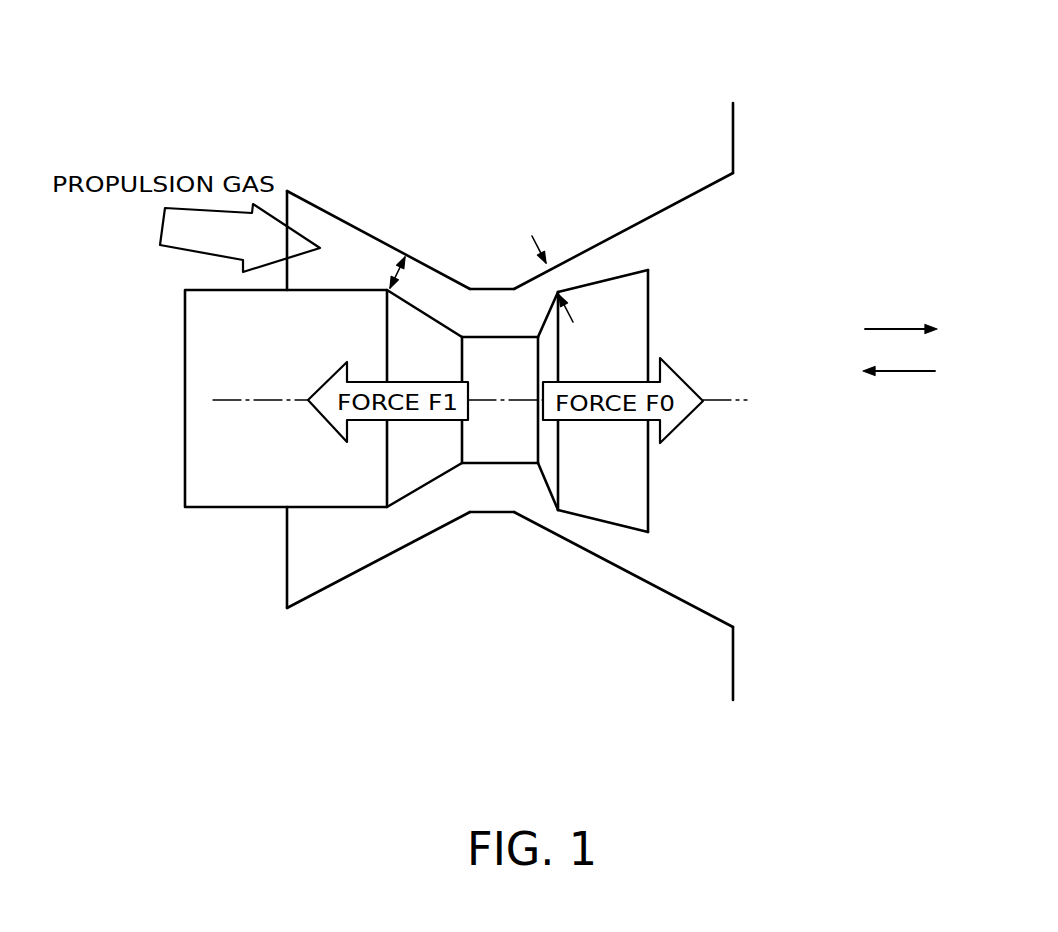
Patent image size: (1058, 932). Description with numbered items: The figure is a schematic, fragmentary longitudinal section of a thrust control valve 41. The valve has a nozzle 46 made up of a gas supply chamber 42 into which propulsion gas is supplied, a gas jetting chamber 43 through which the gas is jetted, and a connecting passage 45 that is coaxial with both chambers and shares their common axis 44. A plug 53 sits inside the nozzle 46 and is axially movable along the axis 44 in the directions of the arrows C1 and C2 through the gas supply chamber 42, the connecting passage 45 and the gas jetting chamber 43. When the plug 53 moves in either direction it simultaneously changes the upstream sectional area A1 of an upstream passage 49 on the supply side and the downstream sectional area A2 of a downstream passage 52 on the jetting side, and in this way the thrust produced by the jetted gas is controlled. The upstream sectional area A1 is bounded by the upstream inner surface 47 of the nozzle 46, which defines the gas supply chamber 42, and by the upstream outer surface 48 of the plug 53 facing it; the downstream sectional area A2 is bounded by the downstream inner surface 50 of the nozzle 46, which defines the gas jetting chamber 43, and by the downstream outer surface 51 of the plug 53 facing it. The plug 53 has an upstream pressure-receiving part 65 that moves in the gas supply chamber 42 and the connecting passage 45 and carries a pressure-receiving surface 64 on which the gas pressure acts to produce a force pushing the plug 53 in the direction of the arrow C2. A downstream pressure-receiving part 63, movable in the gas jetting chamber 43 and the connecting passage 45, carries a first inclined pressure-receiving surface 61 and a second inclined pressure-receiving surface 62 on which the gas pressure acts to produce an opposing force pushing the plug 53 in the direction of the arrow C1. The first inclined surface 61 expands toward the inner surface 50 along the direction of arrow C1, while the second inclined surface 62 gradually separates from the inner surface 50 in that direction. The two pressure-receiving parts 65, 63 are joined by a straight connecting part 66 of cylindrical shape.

The thrust control valve 41 is at (772, 90).
The gas supply chamber 42 is at (345, 240).
The gas jetting chamber 43 is at (640, 223).
The axis 44 is at (727, 400).
The connecting passage 45 is at (493, 303).
The nozzle 46 is at (580, 636).
The upstream inner surface 47 is at (357, 553).
The upstream outer surface 48 is at (430, 483).
The upstream passage 49 is at (422, 522).
The downstream inner surface 50 is at (697, 195).
The downstream outer surface 51 is at (628, 270).
The downstream passage 52 is at (557, 518).
The plug 53 is at (230, 495).
The first inclined pressure-receiving surface 61 is at (542, 487).
The second inclined pressure-receiving surface 62 is at (632, 528).
The downstream pressure-receiving part 63 is at (625, 465).
The pressure-receiving surface 64 is at (432, 317).
The upstream pressure-receiving part 65 is at (410, 363).
The straight connecting part 66 is at (492, 465).
The upstream sectional area A1 is at (390, 270).
The downstream sectional area A2 is at (562, 280).
The arrow C1 is at (897, 328).
The arrow C2 is at (903, 373).